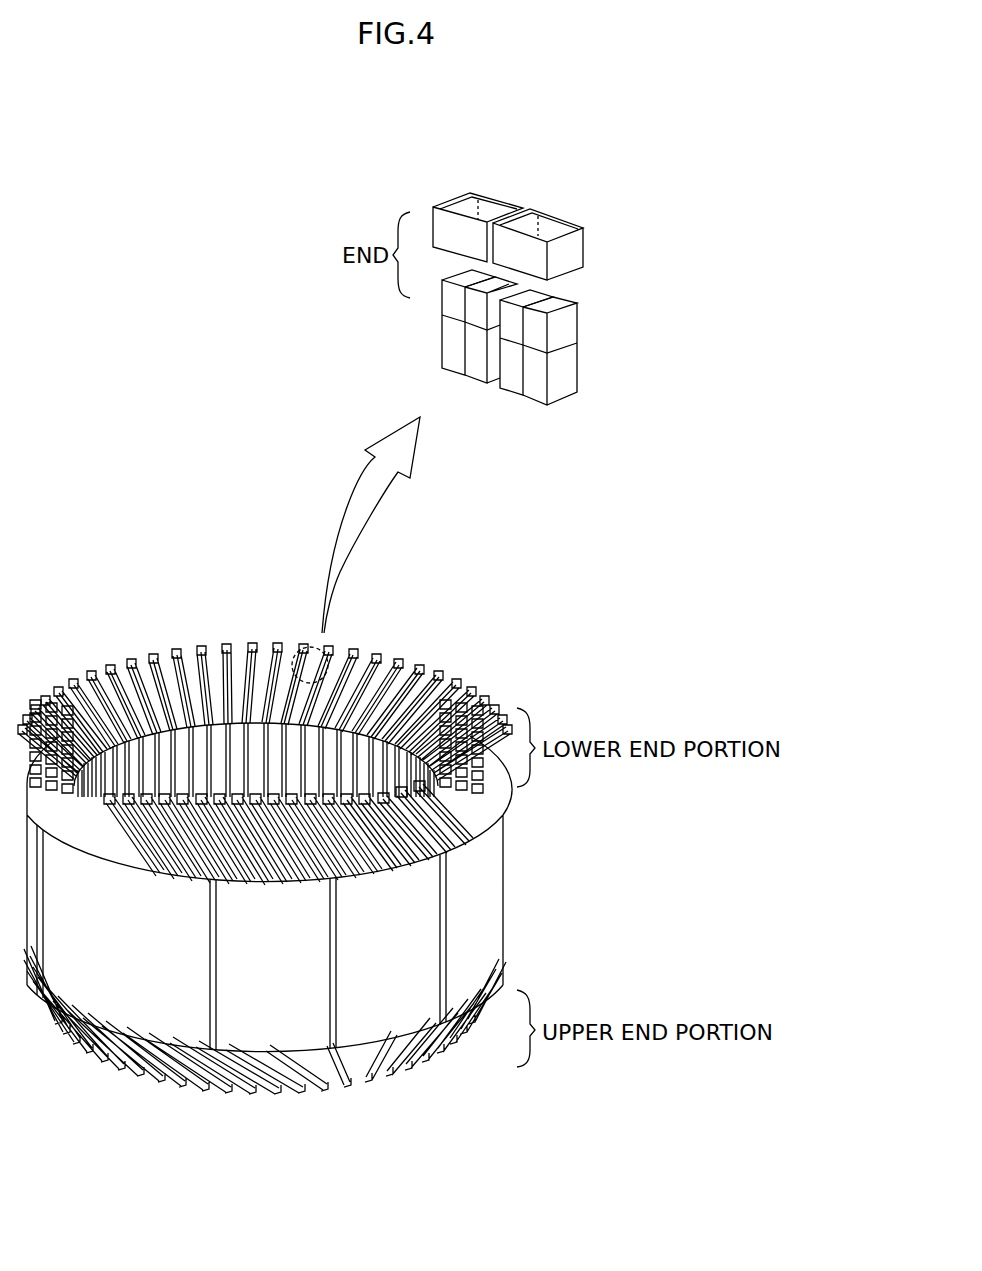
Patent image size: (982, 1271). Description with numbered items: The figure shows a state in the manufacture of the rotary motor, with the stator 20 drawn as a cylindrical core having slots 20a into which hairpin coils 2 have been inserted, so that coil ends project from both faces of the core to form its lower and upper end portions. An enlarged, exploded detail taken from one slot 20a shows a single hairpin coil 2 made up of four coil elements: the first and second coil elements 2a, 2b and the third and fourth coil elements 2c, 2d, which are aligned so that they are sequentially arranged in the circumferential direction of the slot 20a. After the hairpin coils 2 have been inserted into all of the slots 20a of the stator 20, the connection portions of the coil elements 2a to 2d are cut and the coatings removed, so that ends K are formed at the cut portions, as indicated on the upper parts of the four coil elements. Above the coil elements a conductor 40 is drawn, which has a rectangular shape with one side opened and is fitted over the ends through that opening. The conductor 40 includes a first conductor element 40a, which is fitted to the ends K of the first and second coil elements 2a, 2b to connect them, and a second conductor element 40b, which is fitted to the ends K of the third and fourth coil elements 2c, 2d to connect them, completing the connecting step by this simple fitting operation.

The hairpin coil 2 is at (409, 476).
The first coil element 2a is at (447, 357).
The second coil element 2b is at (475, 367).
The third coil element 2c is at (512, 385).
The fourth coil element 2d is at (537, 393).
The ends K is at (477, 308).
The stator 20 is at (341, 894).
The slot 20a is at (446, 852).
The conductor 40 is at (532, 189).
The first conductor element 40a is at (497, 198).
The second conductor element 40b is at (558, 218).